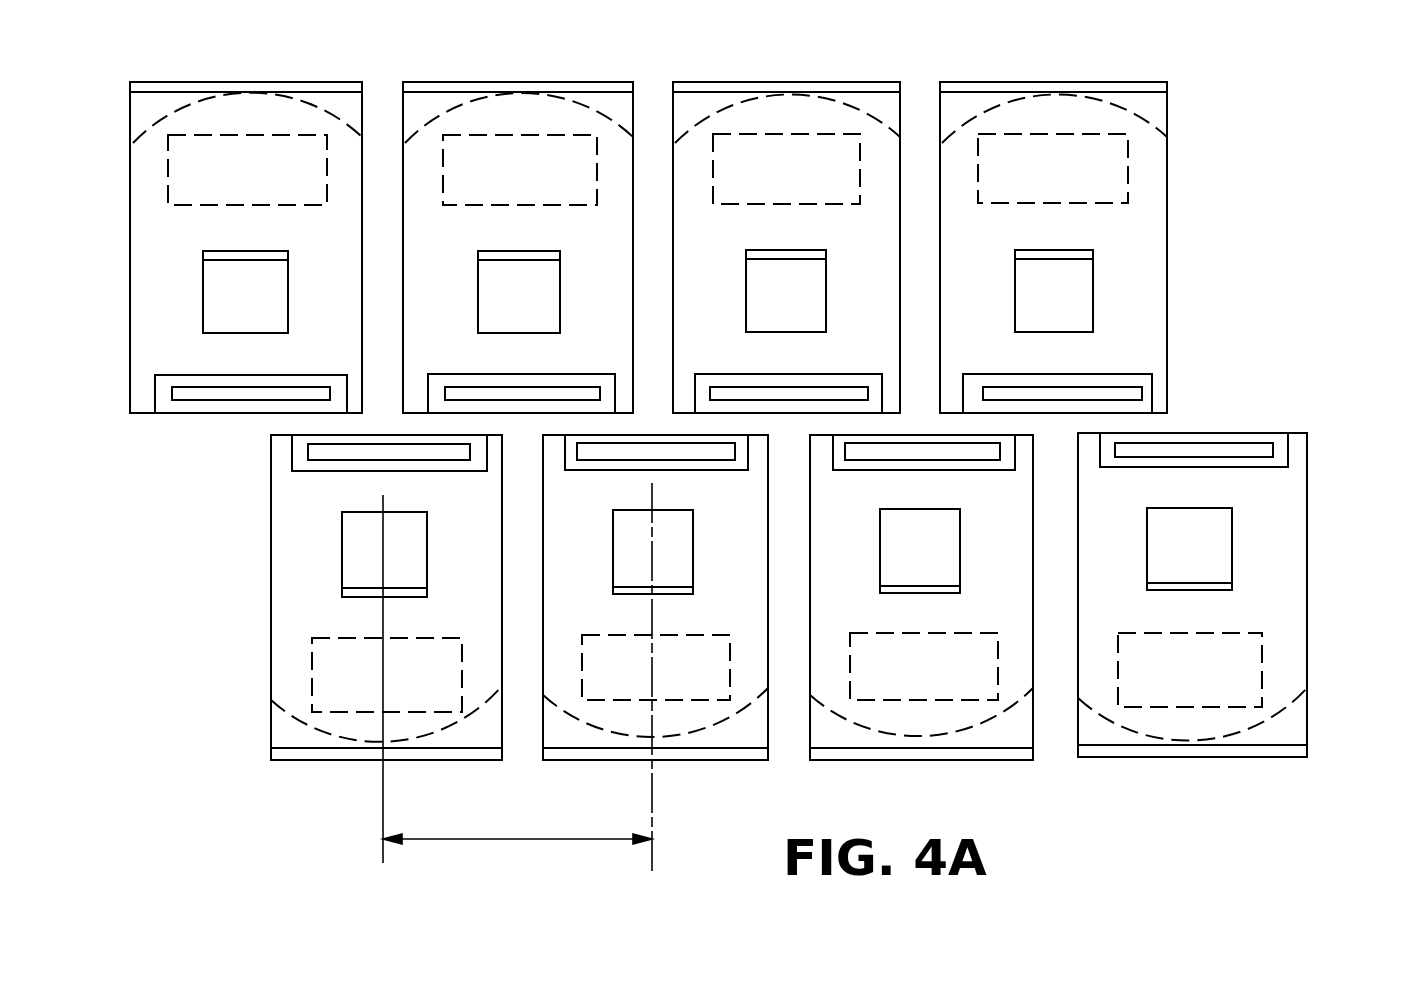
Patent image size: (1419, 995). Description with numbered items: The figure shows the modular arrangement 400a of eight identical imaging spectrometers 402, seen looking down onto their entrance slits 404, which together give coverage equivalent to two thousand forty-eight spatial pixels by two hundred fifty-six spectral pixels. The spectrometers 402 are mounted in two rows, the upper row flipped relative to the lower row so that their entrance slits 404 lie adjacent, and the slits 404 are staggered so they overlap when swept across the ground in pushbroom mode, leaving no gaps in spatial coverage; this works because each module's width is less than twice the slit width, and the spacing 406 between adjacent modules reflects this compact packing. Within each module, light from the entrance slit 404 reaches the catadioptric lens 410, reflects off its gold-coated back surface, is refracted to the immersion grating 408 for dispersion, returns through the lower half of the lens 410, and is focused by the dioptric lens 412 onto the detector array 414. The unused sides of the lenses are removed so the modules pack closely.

The modular arrangement 400a is at (1198, 123).
The spectrometer 402 is at (448, 82).
The entrance slit 404 is at (252, 393).
The pitch distance 406 is at (491, 838).
The immersion grating 408 is at (1075, 290).
The catadioptric lens 410 is at (271, 613).
The dioptric lens 412 is at (305, 735).
The detector array 414 is at (1092, 185).